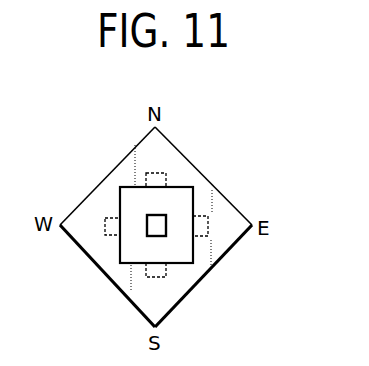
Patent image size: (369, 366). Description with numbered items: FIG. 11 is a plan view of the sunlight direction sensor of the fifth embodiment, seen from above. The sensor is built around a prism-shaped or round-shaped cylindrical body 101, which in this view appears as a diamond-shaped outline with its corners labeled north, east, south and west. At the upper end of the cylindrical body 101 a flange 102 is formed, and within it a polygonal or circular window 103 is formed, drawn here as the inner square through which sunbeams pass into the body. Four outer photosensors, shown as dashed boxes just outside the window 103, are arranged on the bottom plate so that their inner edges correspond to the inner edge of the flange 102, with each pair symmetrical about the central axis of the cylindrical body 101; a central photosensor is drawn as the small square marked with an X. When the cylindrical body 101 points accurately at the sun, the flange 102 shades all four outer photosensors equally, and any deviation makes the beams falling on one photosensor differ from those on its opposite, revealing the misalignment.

The cylindrical body 101 is at (185, 154).
The flange 102 is at (210, 192).
The window 103 is at (130, 187).